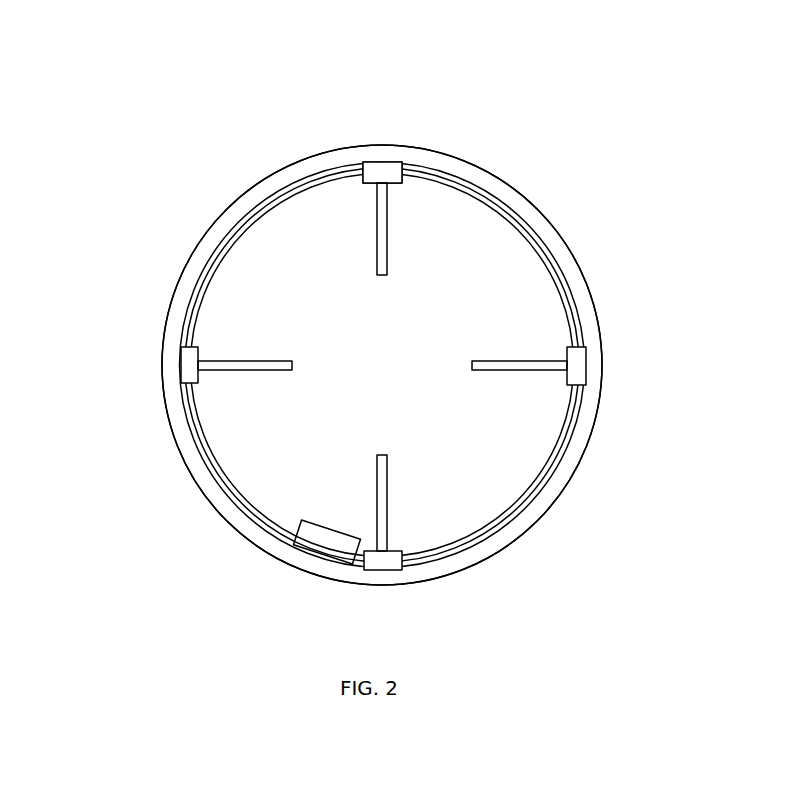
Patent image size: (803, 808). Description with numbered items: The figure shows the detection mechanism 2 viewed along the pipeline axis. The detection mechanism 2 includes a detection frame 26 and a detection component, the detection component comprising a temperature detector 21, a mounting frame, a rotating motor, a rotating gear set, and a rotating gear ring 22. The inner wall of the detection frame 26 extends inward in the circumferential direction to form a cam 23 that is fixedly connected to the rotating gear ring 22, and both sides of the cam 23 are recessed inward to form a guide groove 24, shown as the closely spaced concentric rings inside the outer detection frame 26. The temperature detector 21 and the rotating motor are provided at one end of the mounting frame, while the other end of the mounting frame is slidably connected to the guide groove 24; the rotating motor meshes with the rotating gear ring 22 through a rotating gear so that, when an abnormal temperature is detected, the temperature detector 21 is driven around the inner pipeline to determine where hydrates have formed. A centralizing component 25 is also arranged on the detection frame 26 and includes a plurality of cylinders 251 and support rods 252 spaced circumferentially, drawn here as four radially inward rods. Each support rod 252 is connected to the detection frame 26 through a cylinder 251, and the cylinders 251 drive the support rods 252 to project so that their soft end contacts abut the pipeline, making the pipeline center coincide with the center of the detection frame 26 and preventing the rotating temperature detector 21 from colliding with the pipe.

The detection mechanism 2 is at (382, 312).
The temperature detector 21 is at (304, 572).
The rotating gear ring 22 is at (331, 365).
The cam 23 is at (340, 365).
The guide groove 24 is at (337, 365).
The centralizing component 25 is at (324, 366).
The cylinder 251 is at (466, 128).
The support rod 252 is at (420, 349).
The detection frame 26 is at (420, 365).